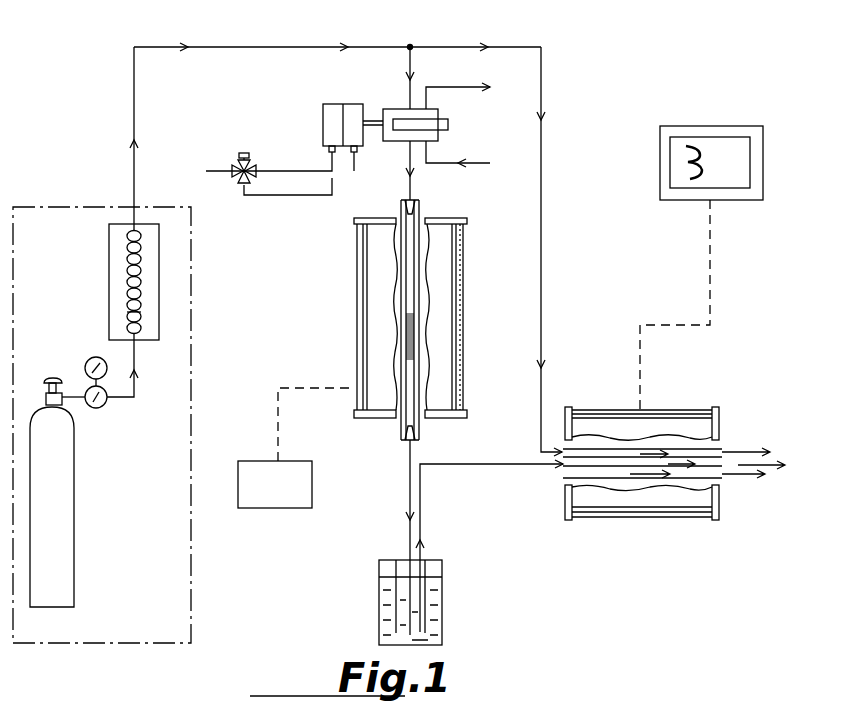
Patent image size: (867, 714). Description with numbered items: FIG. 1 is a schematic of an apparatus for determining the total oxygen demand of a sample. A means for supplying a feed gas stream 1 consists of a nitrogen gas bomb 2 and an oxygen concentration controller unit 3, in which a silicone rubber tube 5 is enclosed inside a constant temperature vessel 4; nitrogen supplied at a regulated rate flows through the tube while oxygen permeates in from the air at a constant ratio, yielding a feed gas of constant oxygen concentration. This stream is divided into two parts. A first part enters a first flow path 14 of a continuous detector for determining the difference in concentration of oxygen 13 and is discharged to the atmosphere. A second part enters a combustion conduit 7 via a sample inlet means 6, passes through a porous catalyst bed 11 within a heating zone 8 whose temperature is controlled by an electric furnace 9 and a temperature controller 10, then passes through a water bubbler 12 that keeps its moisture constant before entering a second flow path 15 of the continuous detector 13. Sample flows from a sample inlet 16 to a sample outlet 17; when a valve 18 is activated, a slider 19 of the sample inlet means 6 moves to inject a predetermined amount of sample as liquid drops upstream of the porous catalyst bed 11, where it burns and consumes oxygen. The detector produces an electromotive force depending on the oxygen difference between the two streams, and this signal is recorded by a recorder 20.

The means for supplying a feed gas stream 1 is at (193, 575).
The nitrogen gas bomb 2 is at (62, 508).
The oxygen concentration controller unit 3 is at (108, 282).
The constant temperature vessel 4 is at (120, 242).
The silicone rubber tube 5 is at (133, 305).
The sample inlet means 6 is at (353, 113).
The combustion conduit 7 is at (420, 212).
The heating zone 8 is at (467, 320).
The electric furnace 9 is at (377, 272).
The temperature controller 10 is at (286, 496).
The porous catalyst bed 11 is at (405, 326).
The water bubbler 12 is at (385, 610).
The continuous detector for determining the difference in concentration of oxygen 13 is at (638, 518).
The first flow path 14 is at (588, 449).
The second flow path 15 is at (610, 466).
The sample inlet 16 is at (483, 163).
The sample outlet 17 is at (465, 84).
The valve 18 is at (250, 160).
The slider 19 is at (448, 125).
The recorder 20 is at (735, 135).